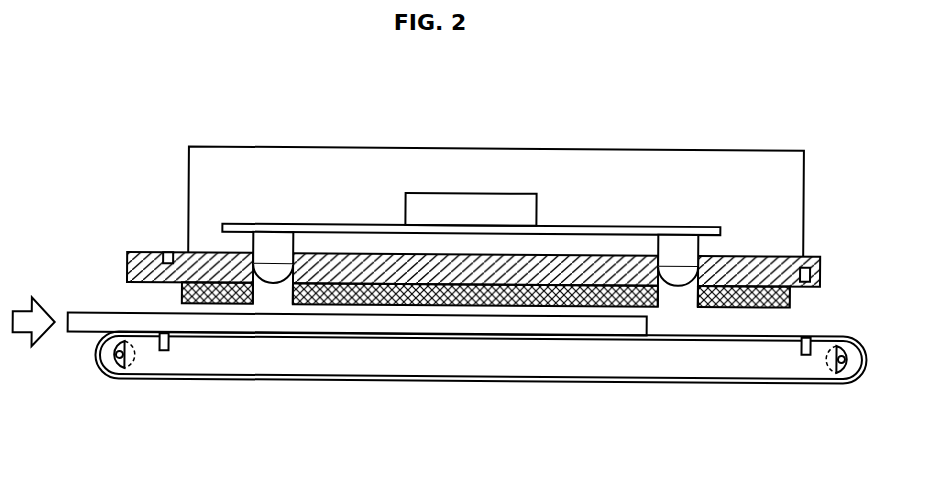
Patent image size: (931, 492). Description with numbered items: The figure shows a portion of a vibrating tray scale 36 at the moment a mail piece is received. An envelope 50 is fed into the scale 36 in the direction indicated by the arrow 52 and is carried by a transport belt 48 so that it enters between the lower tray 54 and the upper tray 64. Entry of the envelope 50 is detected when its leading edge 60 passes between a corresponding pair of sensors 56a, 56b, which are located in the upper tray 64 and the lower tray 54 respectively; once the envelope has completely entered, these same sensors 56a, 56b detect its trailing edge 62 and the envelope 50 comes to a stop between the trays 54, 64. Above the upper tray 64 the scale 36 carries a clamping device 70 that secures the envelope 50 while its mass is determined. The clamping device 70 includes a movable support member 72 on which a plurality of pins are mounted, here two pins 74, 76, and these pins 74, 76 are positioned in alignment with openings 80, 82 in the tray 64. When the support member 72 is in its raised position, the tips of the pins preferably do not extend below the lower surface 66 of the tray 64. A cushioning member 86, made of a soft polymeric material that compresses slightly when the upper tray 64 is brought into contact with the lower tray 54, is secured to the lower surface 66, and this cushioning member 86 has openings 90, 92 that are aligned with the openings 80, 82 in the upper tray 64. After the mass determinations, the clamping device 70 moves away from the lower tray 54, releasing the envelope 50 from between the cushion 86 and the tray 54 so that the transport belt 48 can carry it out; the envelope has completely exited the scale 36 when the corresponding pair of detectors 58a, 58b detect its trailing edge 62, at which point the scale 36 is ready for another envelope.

The scale 36 is at (660, 103).
The clamping device 70 is at (532, 137).
The movable support member 72 is at (363, 218).
The pin 74 is at (272, 242).
The pin 76 is at (680, 243).
The opening 80 is at (253, 276).
The lower surface 66 is at (593, 274).
The upper tray 64 is at (752, 264).
The opening 82 is at (642, 254).
The cushioning member 86 is at (790, 298).
The sensor 56a is at (165, 262).
The detector 58a is at (798, 260).
The opening 90 is at (273, 296).
The opening 92 is at (673, 298).
The envelope 50 is at (100, 313).
The trailing edge 62 is at (68, 316).
The arrow 52 is at (38, 333).
The lower tray 54 is at (380, 363).
The transport belt 48 is at (157, 378).
The leading edge 60 is at (657, 326).
The sensor 56b is at (170, 345).
The detector 58b is at (800, 345).